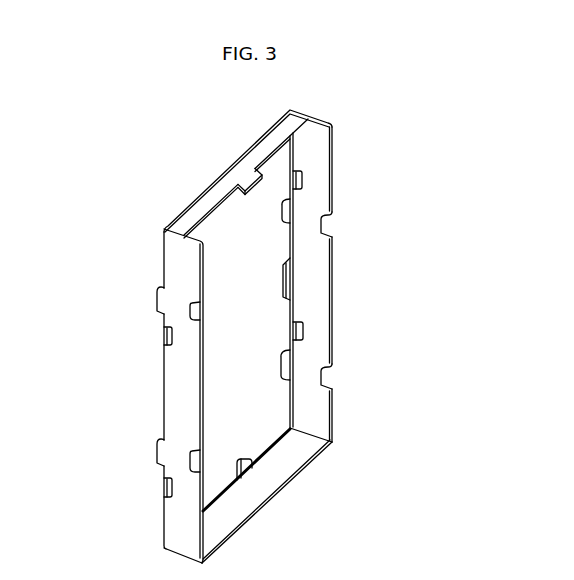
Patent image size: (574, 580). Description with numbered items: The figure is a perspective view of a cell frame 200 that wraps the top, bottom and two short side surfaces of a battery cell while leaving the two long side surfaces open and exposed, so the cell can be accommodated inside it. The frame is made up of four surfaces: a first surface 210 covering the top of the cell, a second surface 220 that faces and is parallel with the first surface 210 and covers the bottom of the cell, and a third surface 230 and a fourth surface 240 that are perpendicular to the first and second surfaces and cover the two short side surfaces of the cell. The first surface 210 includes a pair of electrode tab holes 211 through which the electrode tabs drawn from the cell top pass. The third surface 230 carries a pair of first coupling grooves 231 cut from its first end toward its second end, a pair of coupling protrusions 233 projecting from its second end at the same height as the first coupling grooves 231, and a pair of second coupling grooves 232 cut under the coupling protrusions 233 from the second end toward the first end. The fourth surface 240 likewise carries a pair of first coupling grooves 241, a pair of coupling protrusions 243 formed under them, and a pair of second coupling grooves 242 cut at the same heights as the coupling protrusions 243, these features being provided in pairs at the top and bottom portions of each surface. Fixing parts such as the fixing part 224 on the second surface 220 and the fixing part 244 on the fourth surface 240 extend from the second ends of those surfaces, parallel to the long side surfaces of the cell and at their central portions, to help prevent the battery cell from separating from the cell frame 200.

The cell frame 200 is at (153, 156).
The first surface 210 is at (247, 178).
The electrode tab holes 211 is at (208, 206).
The second surface 220 is at (273, 503).
The fixing part 224 is at (250, 461).
The third surface 230 is at (160, 388).
The first coupling grooves 231 is at (195, 303).
The second coupling grooves 232 is at (162, 333).
The coupling protrusions 233 is at (155, 297).
The fourth surface 240 is at (342, 263).
The first coupling grooves 241 is at (301, 173).
The second coupling grooves 242 is at (323, 226).
The coupling protrusions 243 is at (282, 213).
The fixing part 244 is at (290, 282).